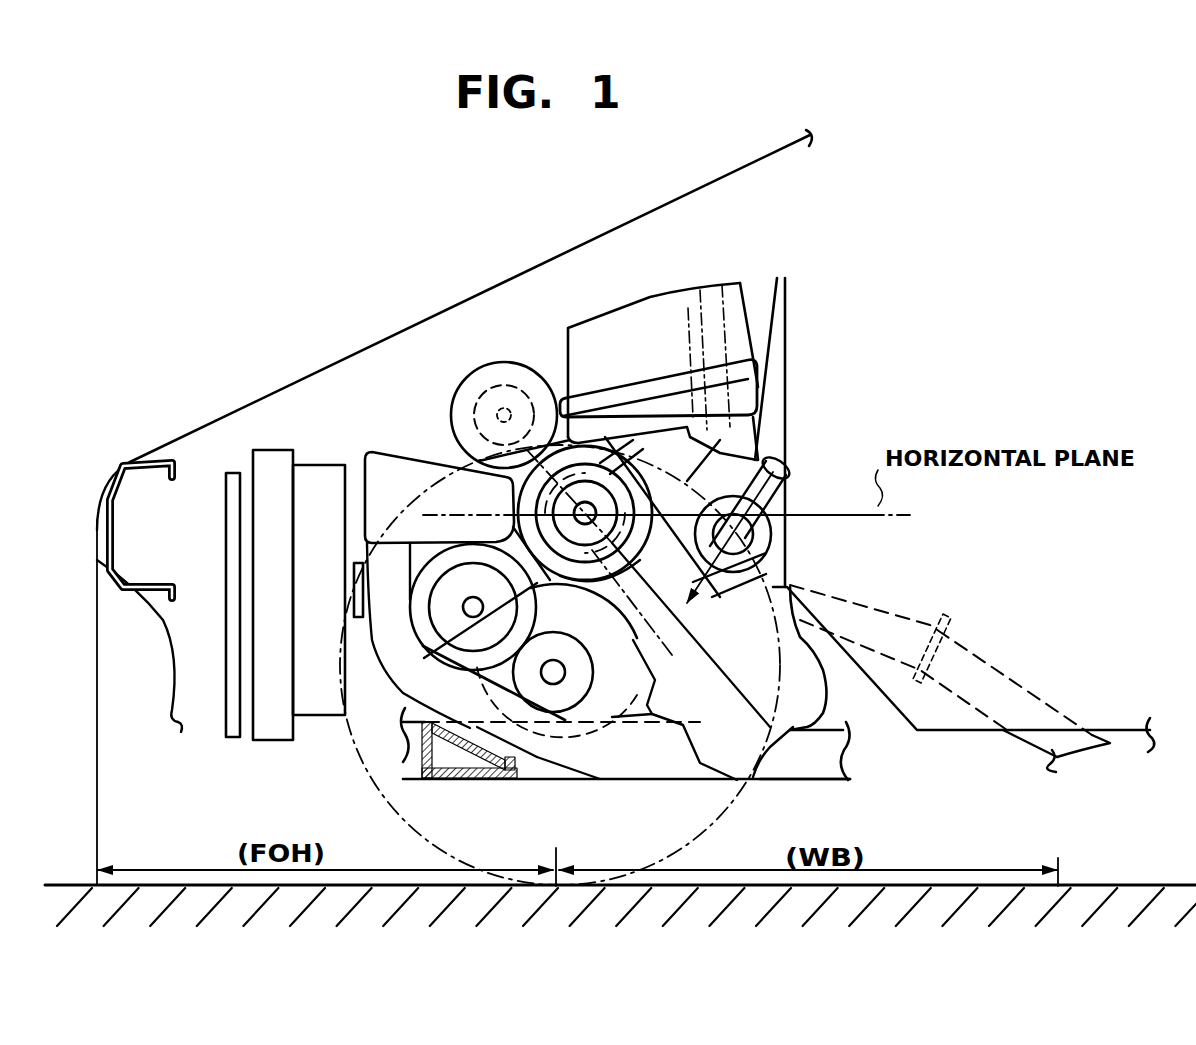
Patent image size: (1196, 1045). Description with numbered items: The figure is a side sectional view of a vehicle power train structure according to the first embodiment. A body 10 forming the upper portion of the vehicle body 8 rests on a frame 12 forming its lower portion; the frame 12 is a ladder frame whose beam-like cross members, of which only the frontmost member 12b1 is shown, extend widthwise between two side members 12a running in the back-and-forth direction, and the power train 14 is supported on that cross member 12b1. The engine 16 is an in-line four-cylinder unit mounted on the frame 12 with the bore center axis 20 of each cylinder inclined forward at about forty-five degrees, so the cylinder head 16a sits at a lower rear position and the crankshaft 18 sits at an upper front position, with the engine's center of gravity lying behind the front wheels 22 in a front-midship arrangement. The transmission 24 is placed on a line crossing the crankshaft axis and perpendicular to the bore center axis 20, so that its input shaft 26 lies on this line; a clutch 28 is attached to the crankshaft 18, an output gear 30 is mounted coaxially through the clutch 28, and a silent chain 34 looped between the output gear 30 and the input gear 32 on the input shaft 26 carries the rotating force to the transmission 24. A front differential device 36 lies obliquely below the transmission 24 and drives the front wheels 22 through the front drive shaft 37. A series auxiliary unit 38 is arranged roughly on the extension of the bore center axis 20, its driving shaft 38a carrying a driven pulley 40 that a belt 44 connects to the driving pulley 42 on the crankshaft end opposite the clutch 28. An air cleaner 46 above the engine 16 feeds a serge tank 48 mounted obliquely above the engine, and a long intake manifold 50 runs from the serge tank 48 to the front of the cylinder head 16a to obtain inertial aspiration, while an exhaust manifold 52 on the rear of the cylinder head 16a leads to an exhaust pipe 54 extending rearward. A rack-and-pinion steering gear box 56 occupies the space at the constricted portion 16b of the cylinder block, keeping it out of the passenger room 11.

The vehicle body 8 is at (625, 212).
The body 10 is at (524, 272).
The passenger room 11 is at (1010, 314).
The frame 12 is at (865, 756).
The side member 12a is at (805, 783).
The cross member 12b1 is at (441, 782).
The power train 14 is at (436, 401).
The engine 16 is at (787, 573).
The cylinder head 16a is at (817, 703).
The constricted portion 16b is at (771, 535).
The crankshaft 18 is at (656, 498).
The bore center axis 20 is at (700, 650).
The front wheels 22 is at (350, 730).
The transmission 24 is at (446, 560).
The input shaft 26 is at (450, 630).
The clutch 28 is at (638, 542).
The output gear 30 is at (637, 466).
The input gear 32 is at (428, 660).
The silent chain 34 is at (483, 524).
The front differential device 36 is at (609, 697).
The front drive shaft 37 is at (553, 664).
The series auxiliary unit 38 is at (498, 383).
The driving shaft 38a is at (483, 405).
The driven pulley 40 is at (528, 405).
The driving pulley 42 is at (638, 608).
The belt 44 is at (591, 397).
The air cleaner 46 is at (678, 304).
The serge tank 48 is at (372, 459).
The intake manifold 50 is at (554, 746).
The exhaust manifold 52 is at (886, 611).
The exhaust pipe 54 is at (1044, 750).
The steering gear box 56 is at (722, 486).